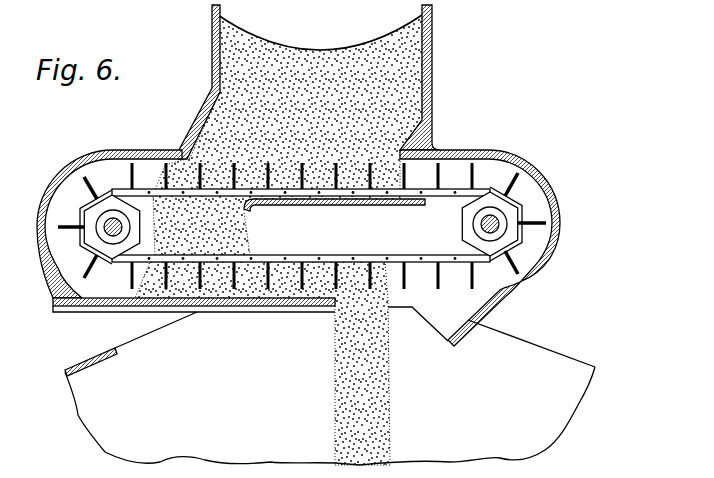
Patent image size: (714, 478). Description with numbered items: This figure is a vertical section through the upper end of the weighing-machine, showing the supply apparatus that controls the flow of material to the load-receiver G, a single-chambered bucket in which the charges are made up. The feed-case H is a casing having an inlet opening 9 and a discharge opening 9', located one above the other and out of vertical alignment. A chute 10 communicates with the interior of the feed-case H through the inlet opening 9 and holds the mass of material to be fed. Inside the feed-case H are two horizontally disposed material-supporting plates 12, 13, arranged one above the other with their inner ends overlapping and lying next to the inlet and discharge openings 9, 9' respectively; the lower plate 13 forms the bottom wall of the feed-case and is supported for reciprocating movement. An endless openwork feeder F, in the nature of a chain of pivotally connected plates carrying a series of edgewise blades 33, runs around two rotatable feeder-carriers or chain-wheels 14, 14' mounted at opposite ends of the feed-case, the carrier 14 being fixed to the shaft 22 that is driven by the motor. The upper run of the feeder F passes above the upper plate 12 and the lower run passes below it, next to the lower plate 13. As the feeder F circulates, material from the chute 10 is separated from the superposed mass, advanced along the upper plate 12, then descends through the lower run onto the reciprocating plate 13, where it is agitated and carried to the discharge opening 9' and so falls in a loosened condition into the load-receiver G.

The inlet opening 9 is at (425, 78).
The discharge opening 9' is at (418, 331).
The chute 10 is at (210, 103).
The upper material-supporting plate 12 is at (334, 214).
The lower material-supporting plate 13 is at (262, 306).
The feeder-carrier 14 is at (95, 227).
The feeder-carrier 14' is at (485, 223).
The shaft 22 is at (112, 233).
The blades 33 is at (474, 170).
The feed-case H is at (109, 211).
The endless openwork feeder F is at (414, 245).
The load-receiver G is at (330, 388).